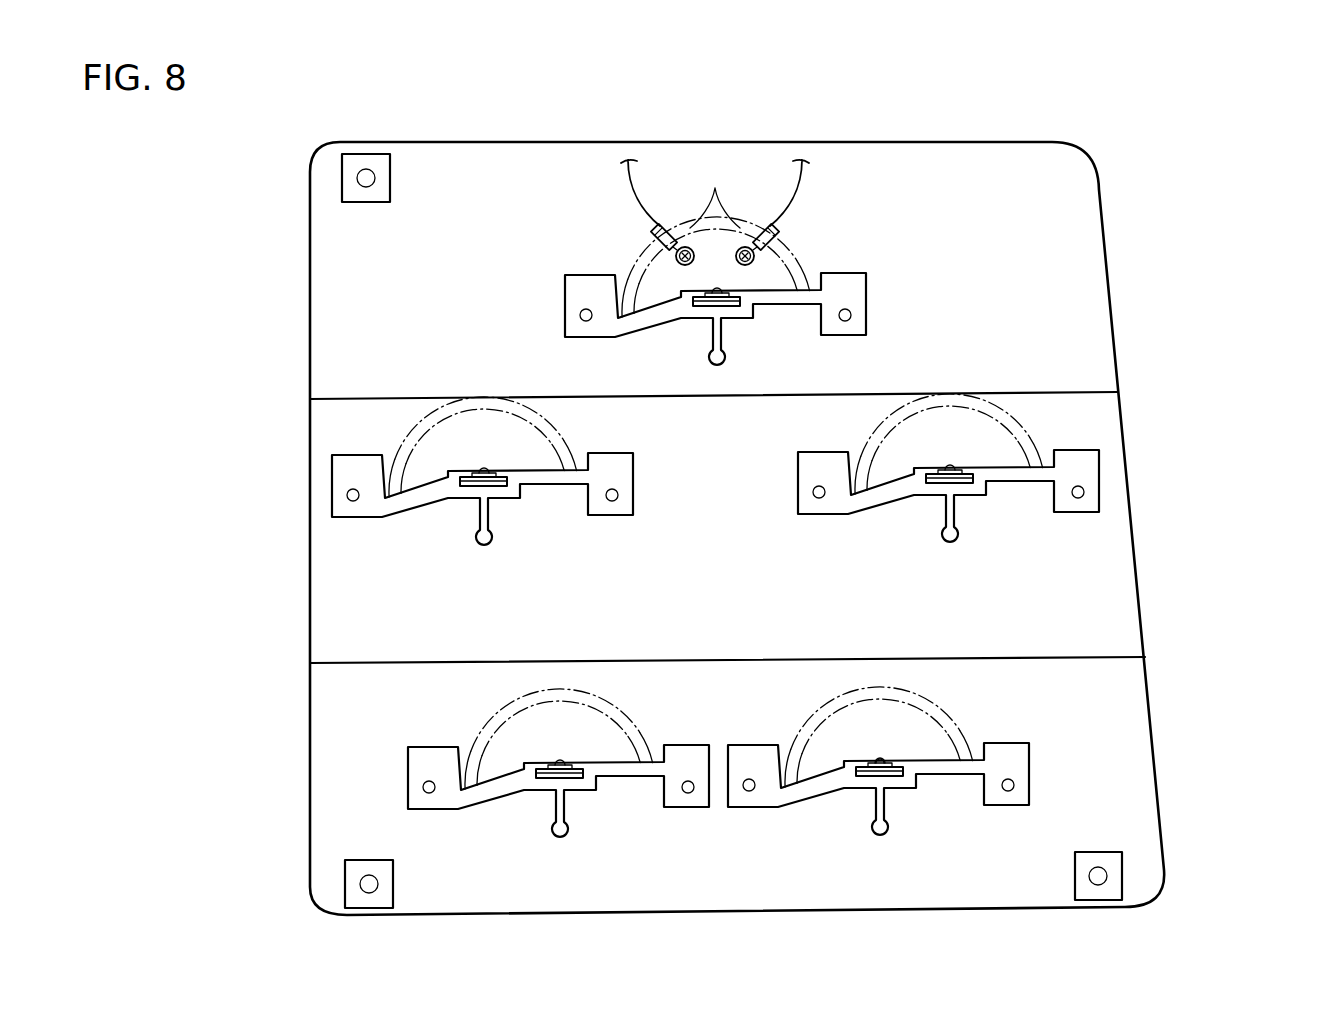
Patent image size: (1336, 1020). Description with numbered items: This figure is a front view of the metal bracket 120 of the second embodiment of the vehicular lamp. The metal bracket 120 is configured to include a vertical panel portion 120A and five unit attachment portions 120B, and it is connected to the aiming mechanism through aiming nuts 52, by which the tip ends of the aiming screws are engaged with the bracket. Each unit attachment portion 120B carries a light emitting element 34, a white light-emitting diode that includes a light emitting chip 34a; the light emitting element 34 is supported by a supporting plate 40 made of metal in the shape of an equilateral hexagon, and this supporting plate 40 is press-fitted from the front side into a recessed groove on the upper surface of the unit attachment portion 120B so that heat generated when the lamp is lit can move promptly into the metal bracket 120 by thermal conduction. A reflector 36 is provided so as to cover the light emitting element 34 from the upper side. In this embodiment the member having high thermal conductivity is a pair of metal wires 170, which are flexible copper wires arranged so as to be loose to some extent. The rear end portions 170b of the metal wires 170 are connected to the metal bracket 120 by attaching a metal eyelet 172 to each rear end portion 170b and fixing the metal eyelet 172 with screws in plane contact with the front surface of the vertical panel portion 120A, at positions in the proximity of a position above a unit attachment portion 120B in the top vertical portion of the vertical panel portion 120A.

The metal bracket 120 is at (1127, 169).
The vertical panel portion 120A is at (1065, 582).
The unit attachment portion 120B is at (845, 290).
The aiming nut 52 is at (345, 176).
The light emitting element 34 is at (723, 288).
The light emitting chip 34a is at (880, 758).
The reflector 36 is at (862, 684).
The supporting plate 40 is at (867, 776).
The metal wire 170 is at (627, 187).
The rear end portion 170b is at (651, 232).
The metal eyelet 172 is at (715, 215).